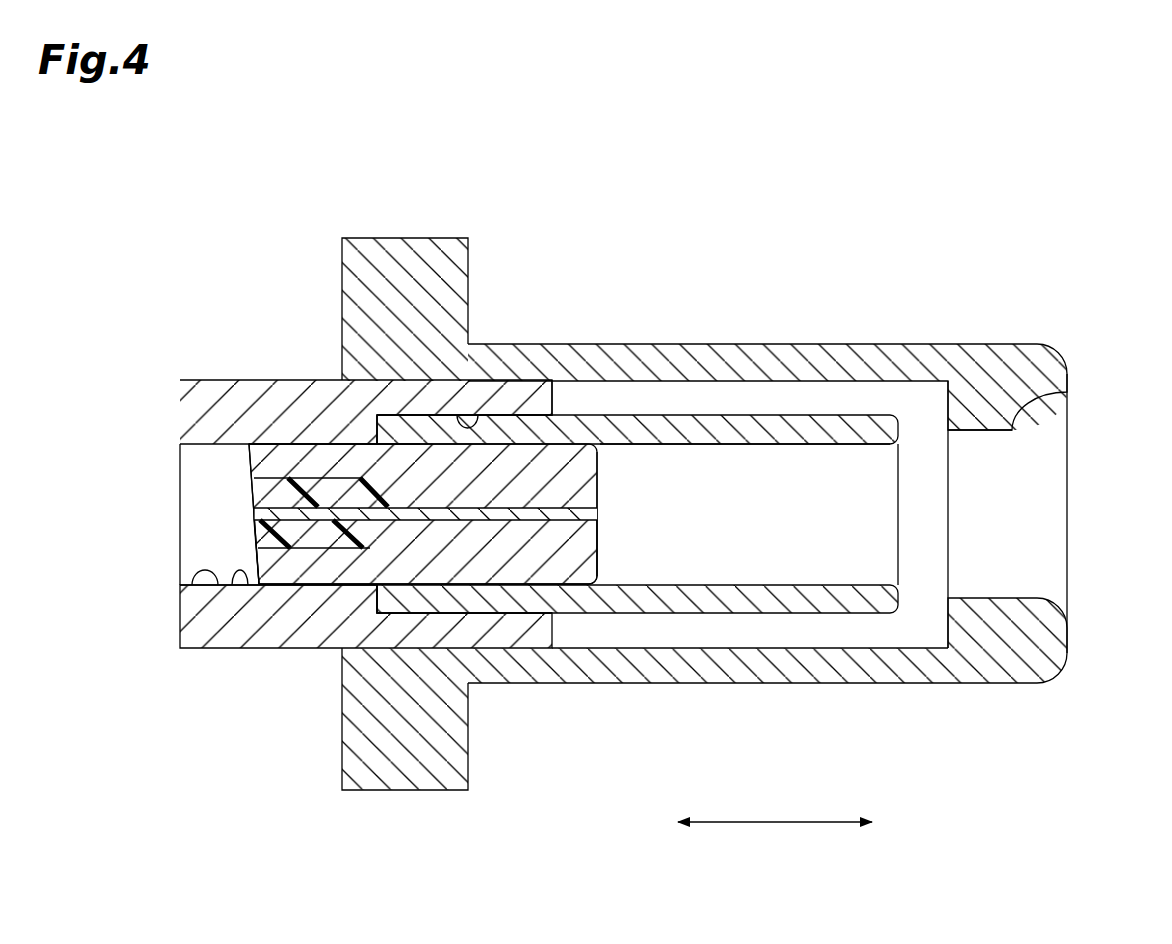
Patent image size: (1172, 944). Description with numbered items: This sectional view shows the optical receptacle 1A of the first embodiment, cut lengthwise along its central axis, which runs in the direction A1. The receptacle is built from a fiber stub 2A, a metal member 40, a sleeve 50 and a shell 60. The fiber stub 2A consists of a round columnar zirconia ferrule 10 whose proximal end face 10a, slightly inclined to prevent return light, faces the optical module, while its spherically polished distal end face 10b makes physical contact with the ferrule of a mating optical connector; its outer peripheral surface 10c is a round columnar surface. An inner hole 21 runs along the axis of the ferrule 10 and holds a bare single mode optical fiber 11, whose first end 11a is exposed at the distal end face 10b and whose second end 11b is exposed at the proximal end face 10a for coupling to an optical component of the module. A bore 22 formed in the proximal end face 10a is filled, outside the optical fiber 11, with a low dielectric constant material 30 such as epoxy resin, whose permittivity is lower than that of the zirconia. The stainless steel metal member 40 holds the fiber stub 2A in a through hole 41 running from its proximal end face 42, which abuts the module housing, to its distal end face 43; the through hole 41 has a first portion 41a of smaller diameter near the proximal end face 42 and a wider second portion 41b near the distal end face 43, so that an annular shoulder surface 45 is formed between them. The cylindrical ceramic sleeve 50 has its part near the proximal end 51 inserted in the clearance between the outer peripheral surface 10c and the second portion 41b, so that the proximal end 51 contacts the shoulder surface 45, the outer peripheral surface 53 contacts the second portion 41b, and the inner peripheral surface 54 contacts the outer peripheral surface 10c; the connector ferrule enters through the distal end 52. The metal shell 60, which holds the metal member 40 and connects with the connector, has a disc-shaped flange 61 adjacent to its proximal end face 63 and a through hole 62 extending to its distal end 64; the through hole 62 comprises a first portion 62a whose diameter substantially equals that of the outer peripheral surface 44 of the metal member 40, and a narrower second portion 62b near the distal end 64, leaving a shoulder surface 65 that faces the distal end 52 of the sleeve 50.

The optical receptacle 1A is at (907, 167).
The ferrule 10 is at (517, 455).
The proximal end face 10a is at (248, 468).
The distal end face 10b is at (598, 468).
The outer peripheral surface 10c is at (289, 455).
The optical fiber 11 is at (490, 540).
The first end 11a is at (600, 512).
The second end 11b is at (254, 518).
The inner hole 21 is at (560, 512).
The bore 22 is at (337, 540).
The low dielectric constant material 30 is at (293, 550).
The metal member 40 is at (208, 660).
The through hole 41 is at (252, 600).
The first portion 41a is at (190, 572).
The second portion 41b is at (470, 415).
The proximal end face 42 is at (180, 612).
The distal end face 43 is at (553, 395).
The outer peripheral surface 44 is at (223, 380).
The shoulder surface 45 is at (380, 600).
The sleeve 50 is at (758, 405).
The proximal end 51 is at (376, 419).
The distal end 52 is at (905, 460).
The outer peripheral surface 53 is at (673, 413).
The inner peripheral surface 54 is at (752, 445).
The shell 60 is at (884, 338).
The flange 61 is at (424, 250).
The through hole 62 is at (990, 668).
The first portion 62a is at (813, 640).
The second portion 62b is at (1022, 432).
The proximal end face 63 is at (342, 750).
The distal end 64 is at (1068, 378).
The shoulder surface 65 is at (948, 607).
The fiber stub 2A is at (610, 560).
The direction A1 is at (778, 825).